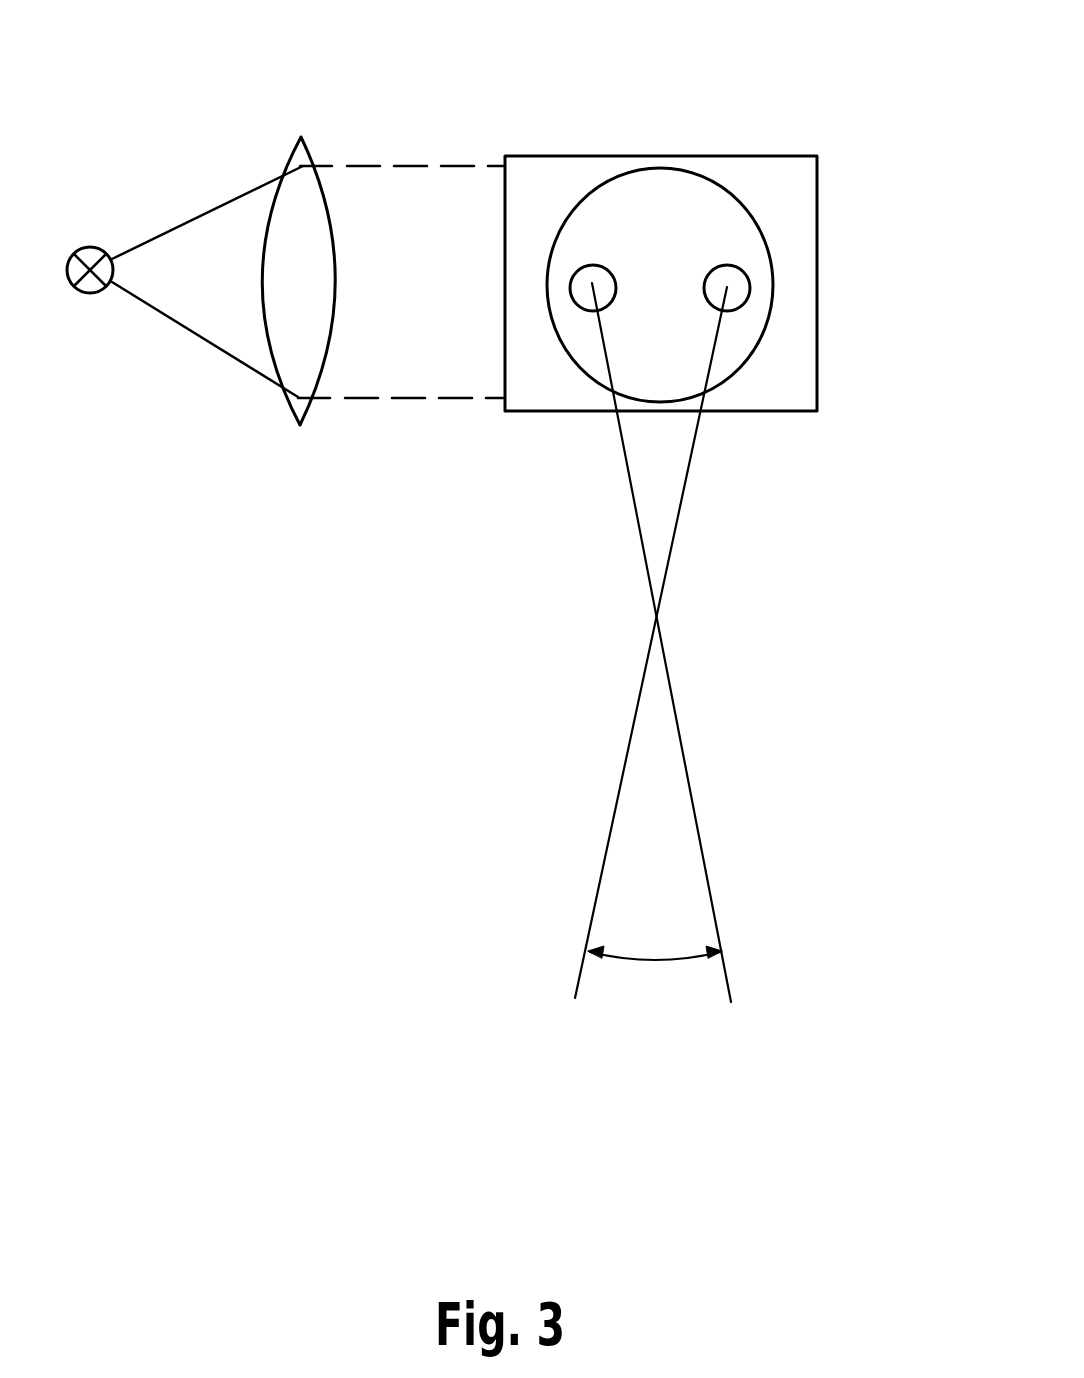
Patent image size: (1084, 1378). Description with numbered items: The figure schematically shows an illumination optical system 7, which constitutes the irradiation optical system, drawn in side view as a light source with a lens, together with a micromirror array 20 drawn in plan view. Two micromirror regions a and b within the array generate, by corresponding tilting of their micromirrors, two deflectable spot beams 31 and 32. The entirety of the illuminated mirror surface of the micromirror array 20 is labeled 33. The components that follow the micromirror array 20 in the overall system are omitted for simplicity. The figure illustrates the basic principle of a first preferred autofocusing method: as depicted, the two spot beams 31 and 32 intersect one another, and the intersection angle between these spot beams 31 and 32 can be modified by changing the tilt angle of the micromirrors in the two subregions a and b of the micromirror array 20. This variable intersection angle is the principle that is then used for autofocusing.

The illumination optical system 7 is at (179, 166).
The micromirror array 20 is at (785, 385).
The illuminated mirror surface 33 is at (698, 210).
The micromirror region a is at (583, 287).
The micromirror region b is at (737, 287).
The spot beam 31 is at (635, 518).
The spot beam 32 is at (678, 519).